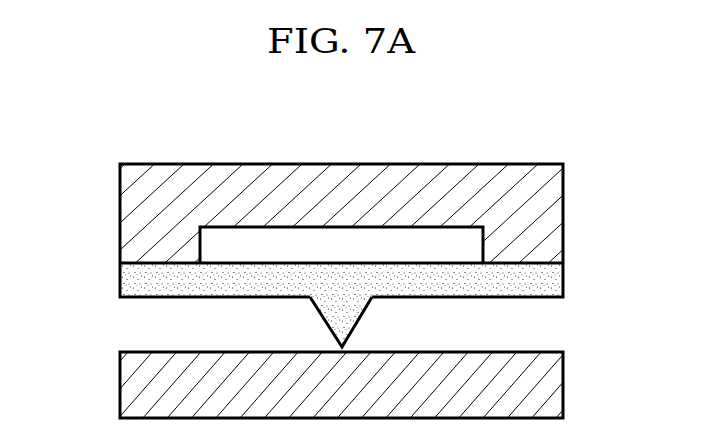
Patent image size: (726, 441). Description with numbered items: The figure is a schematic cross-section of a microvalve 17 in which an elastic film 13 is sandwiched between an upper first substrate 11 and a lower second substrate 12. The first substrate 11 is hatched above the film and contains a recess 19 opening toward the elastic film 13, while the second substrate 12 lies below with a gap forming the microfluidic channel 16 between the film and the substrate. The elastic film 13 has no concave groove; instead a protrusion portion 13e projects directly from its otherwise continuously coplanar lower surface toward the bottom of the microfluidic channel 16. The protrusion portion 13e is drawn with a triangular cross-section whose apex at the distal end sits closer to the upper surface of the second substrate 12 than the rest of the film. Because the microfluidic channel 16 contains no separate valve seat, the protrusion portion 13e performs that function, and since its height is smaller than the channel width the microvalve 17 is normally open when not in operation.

The microvalve 17 is at (581, 163).
The first substrate 11 is at (563, 215).
The cavity 19 is at (417, 248).
The elastic film 13 is at (563, 282).
The protrusion portion 13e is at (358, 322).
The second substrate 12 is at (563, 386).
The microfluidic channel 16 is at (158, 332).